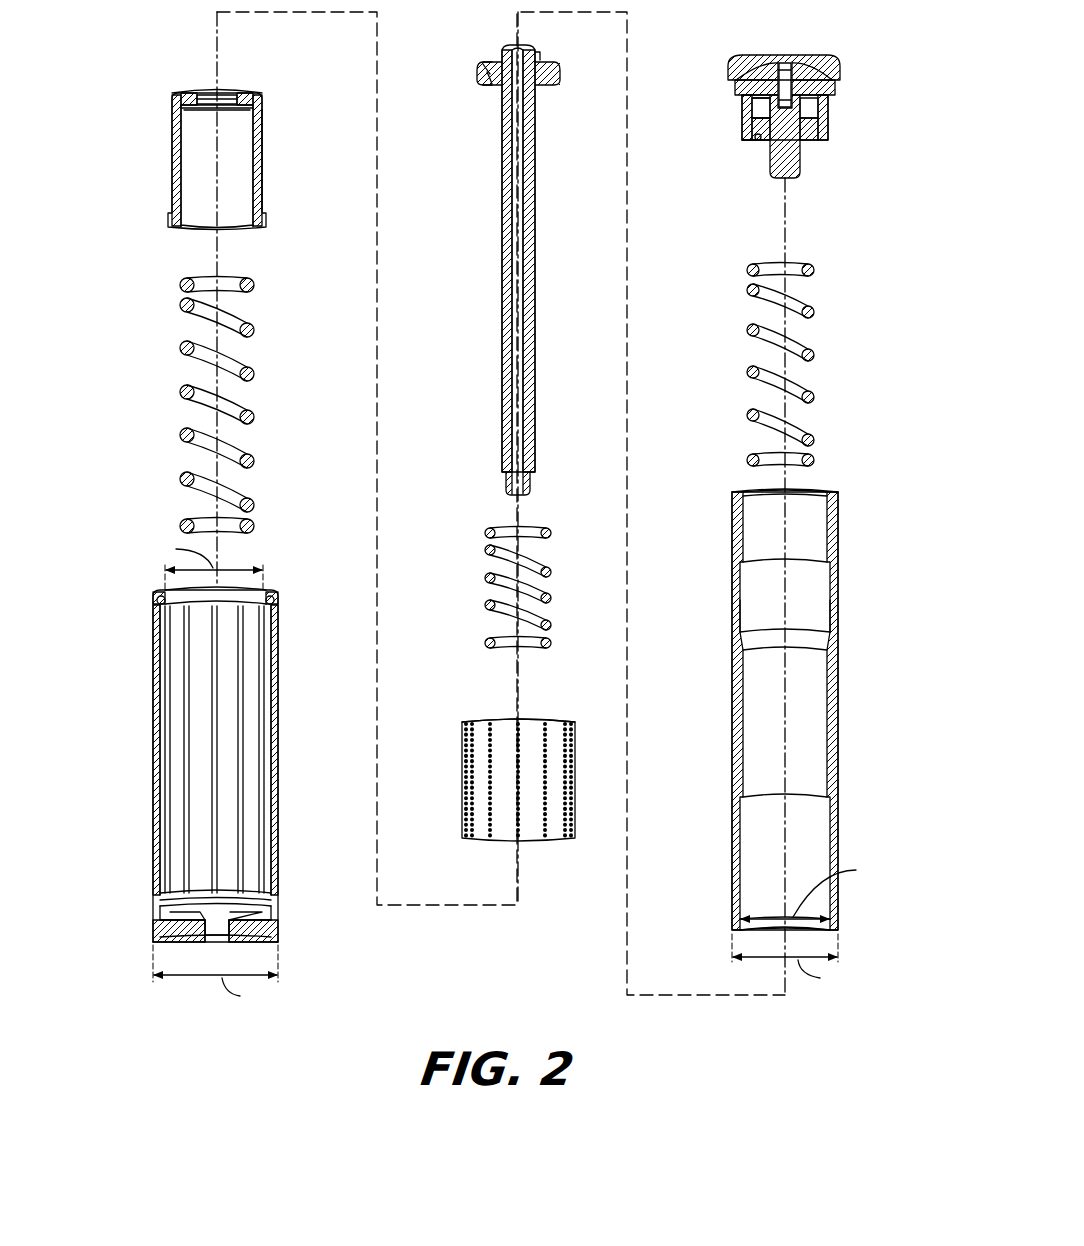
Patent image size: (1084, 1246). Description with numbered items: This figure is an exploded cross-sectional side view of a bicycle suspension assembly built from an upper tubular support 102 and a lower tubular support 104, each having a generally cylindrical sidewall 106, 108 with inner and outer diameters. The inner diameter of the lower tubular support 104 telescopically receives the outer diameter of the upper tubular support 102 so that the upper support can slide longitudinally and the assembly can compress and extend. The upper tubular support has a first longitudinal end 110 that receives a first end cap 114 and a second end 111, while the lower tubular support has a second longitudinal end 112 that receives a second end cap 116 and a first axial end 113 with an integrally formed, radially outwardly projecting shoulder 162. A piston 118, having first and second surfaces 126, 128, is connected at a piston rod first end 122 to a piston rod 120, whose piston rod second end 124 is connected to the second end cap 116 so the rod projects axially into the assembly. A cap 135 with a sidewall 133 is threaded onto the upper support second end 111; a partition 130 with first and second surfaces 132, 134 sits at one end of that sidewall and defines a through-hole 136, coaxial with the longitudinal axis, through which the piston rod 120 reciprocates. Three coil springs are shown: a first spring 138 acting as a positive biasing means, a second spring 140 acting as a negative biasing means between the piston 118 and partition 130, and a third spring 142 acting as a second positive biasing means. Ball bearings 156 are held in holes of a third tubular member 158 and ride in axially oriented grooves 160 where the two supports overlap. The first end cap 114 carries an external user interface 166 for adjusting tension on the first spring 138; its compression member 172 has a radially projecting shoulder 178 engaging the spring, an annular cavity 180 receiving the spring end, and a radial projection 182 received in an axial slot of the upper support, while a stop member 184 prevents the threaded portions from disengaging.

The upper tubular support 102 is at (828, 726).
The lower tubular support 104 is at (210, 772).
The sidewall of upper tubular support 106 is at (838, 603).
The sidewall of lower tubular support 108 is at (280, 682).
The first longitudinal end 110 is at (835, 492).
The upper tubular support second end 111 is at (840, 920).
The second longitudinal end 112 is at (152, 922).
The lower tubular support first axial end 113 is at (279, 601).
The first end cap 114 is at (790, 130).
The second end cap 116 is at (268, 952).
The piston 118 is at (477, 70).
The piston rod 120 is at (501, 247).
The piston rod first end 122 is at (530, 50).
The piston rod second end 124 is at (504, 462).
The piston first surface 126 is at (498, 61).
The piston second surface 128 is at (488, 87).
The partition 130 is at (206, 112).
The partition first surface 132 is at (240, 93).
The sidewall of cap 133 is at (264, 152).
The partition second surface 134 is at (187, 107).
The cap 135 is at (225, 156).
The through-hole 136 is at (212, 93).
The first spring 138 is at (815, 308).
The second spring 140 is at (548, 530).
The third spring 142 is at (253, 374).
The ball bearings 156 is at (535, 782).
The third tubular member 158 is at (520, 720).
The axially oriented grooves 160 is at (186, 678).
The integrally formed shoulder 162 is at (156, 603).
The user interface 166 is at (838, 110).
The compression member 172 is at (742, 142).
The radially projecting shoulder 178 is at (830, 128).
The annular cavity 180 is at (756, 142).
The radial projection 182 is at (742, 128).
The stop member 184 is at (800, 170).